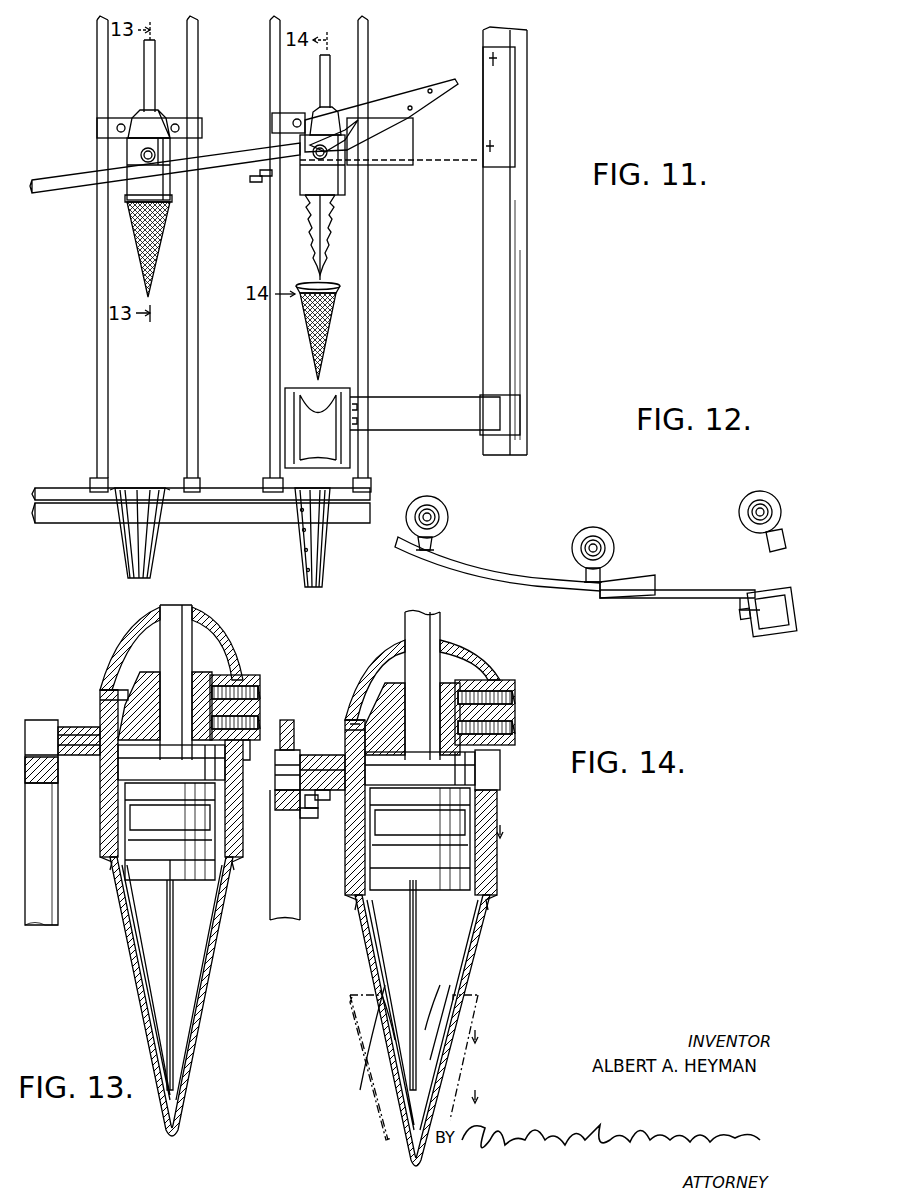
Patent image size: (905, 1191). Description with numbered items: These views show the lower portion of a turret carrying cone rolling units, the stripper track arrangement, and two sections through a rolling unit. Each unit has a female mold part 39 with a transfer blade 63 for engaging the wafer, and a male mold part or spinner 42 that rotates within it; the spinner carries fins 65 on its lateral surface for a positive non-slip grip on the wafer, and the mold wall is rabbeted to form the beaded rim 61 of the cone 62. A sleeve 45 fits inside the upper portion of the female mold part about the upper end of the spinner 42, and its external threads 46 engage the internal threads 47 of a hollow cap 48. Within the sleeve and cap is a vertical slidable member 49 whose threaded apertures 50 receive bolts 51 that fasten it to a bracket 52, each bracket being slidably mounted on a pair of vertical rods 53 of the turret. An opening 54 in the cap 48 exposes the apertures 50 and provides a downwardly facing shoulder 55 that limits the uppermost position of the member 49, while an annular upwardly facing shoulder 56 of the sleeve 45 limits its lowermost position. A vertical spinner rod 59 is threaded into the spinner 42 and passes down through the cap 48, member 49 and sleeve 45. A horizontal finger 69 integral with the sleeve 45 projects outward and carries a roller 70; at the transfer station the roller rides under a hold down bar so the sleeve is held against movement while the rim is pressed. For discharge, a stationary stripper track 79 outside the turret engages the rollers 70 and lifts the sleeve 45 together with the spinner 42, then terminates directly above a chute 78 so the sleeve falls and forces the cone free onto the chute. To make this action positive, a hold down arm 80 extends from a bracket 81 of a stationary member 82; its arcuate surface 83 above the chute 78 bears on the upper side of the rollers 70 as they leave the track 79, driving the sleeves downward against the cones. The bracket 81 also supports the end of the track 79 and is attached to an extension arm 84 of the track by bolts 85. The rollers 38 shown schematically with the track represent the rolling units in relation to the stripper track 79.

In FIG. 12, the wheel 38 is at (446, 510).
In FIG. 11, the female mold part 39 is at (155, 535).
In FIG. 11, the spinner 42 is at (328, 212).
In FIG. 13, the spinner 42 is at (158, 918).
In FIG. 14, the spinner 42 is at (408, 930).
In FIG. 13, the sleeve 45 is at (240, 805).
In FIG. 14, the sleeve 45 is at (497, 812).
In FIG. 13, the external threads 46 is at (104, 700).
In FIG. 14, the external threads 46 is at (352, 728).
In FIG. 13, the internal threads 47 is at (130, 690).
In FIG. 14, the internal threads 47 is at (395, 750).
In FIG. 11, the hollow cap 48 is at (162, 112).
In FIG. 13, the hollow cap 48 is at (130, 648).
In FIG. 14, the hollow cap 48 is at (370, 680).
In FIG. 13, the vertical slidable member 49 is at (140, 745).
In FIG. 14, the vertical slidable member 49 is at (390, 752).
In FIG. 13, the threaded apertures 50 is at (248, 685).
In FIG. 14, the threaded apertures 50 is at (495, 690).
In FIG. 13, the bolts 51 is at (260, 698).
In FIG. 14, the bolts 51 is at (515, 705).
In FIG. 11, the bracket 52 is at (200, 123).
In FIG. 11, the vertical rods 53 is at (100, 425).
In FIG. 13, the opening 54 is at (228, 660).
In FIG. 14, the opening 54 is at (500, 760).
In FIG. 13, the downwardly facing shoulder 55 is at (220, 650).
In FIG. 14, the downwardly facing shoulder 55 is at (470, 682).
In FIG. 13, the annular upwardly facing shoulder 56 is at (118, 832).
In FIG. 14, the annular upwardly facing shoulder 56 is at (478, 872).
In FIG. 11, the spinner rod 59 is at (156, 60).
In FIG. 13, the spinner rod 59 is at (178, 606).
In FIG. 14, the spinner rod 59 is at (418, 614).
In FIG. 11, the beaded rim 61 is at (126, 205).
In FIG. 13, the beaded rim 61 is at (110, 866).
In FIG. 14, the beaded rim 61 is at (488, 900).
In FIG. 11, the cone 62 is at (152, 275).
In FIG. 13, the cone 62 is at (212, 972).
In FIG. 14, the cone 62 is at (368, 960).
In FIG. 11, the transfer blade 63 is at (130, 535).
In FIG. 14, the fins 65 is at (448, 1005).
In FIG. 11, the horizontal finger 69 is at (140, 154).
In FIG. 12, the horizontal finger 69 is at (434, 542).
In FIG. 13, the horizontal finger 69 is at (74, 755).
In FIG. 14, the horizontal finger 69 is at (328, 790).
In FIG. 11, the roller 70 is at (172, 150).
In FIG. 12, the roller 70 is at (418, 550).
In FIG. 13, the roller 70 is at (45, 722).
In FIG. 14, the roller 70 is at (305, 760).
In FIG. 11, the chute 78 is at (328, 441).
In FIG. 11, the stripper track 79 is at (66, 188).
In FIG. 12, the stripper track 79 is at (492, 572).
In FIG. 13, the stripper track 79 is at (56, 780).
In FIG. 11, the hold down arm 80 is at (390, 104).
In FIG. 12, the hold down arm 80 is at (660, 582).
In FIG. 14, the hold down arm 80 is at (292, 730).
In FIG. 11, the bracket 81 is at (433, 165).
In FIG. 12, the bracket 81 is at (703, 590).
In FIG. 11, the stationary member 82 is at (483, 195).
In FIG. 12, the stationary member 82 is at (775, 630).
In FIG. 11, the arcuate surface 83 is at (345, 125).
In FIG. 11, the extension arm 84 is at (262, 173).
In FIG. 14, the extension arm 84 is at (308, 808).
In FIG. 11, the bolts 85 is at (256, 182).
In FIG. 14, the bolts 85 is at (305, 820).